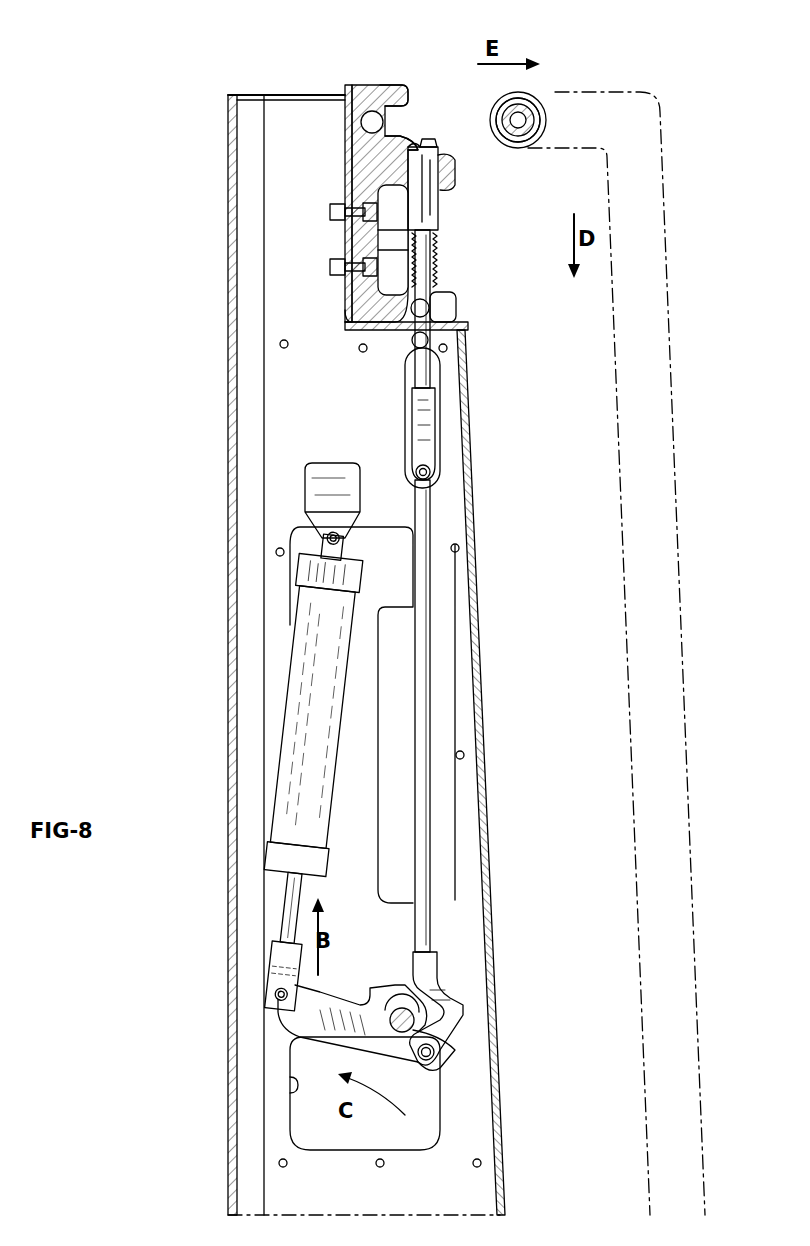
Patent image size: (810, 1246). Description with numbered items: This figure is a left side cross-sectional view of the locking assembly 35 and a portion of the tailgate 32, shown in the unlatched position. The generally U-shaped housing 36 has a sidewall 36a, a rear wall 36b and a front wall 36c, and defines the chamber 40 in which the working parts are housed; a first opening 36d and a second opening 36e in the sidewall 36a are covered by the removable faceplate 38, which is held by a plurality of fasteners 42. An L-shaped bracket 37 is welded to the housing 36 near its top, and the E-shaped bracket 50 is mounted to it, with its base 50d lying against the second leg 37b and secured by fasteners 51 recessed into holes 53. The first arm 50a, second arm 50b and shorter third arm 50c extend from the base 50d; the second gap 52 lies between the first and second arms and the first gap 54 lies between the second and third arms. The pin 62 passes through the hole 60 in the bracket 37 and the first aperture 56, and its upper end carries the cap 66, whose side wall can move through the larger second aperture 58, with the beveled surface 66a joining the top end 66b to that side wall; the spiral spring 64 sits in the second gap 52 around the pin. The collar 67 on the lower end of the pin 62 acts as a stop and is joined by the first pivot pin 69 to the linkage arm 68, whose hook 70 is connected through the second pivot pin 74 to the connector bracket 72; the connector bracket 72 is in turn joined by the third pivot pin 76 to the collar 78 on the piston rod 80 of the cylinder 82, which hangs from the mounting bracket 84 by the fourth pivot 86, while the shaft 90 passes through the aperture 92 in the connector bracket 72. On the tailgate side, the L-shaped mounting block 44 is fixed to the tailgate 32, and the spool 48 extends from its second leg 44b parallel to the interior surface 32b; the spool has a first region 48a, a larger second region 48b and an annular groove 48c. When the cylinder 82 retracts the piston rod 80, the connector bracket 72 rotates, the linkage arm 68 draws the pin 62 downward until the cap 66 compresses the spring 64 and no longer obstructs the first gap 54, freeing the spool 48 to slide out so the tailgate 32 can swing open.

The tailgate 32 is at (651, 681).
The interior surface of tailgate 32b is at (606, 392).
The locking assembly 35 is at (490, 272).
The housing 36 is at (235, 655).
The sidewall of housing 36a is at (327, 817).
The rear wall of housing 36b is at (482, 800).
The front wall of housing 36c is at (237, 250).
The first opening 36d is at (290, 1085).
The second opening 36e is at (440, 370).
The L-shaped bracket 37 is at (408, 236).
The second leg of L-shaped bracket 37b is at (385, 270).
The faceplate 38 is at (383, 958).
The chamber 40 is at (288, 428).
The fasteners 42 is at (280, 344).
The mounting block 44 is at (640, 634).
The second leg of mounting block 44b is at (590, 85).
The spool 48 is at (524, 77).
The first region of spool 48a is at (505, 112).
The second region of spool 48b is at (518, 120).
The annular groove 48c is at (544, 118).
The E-shaped bracket 50 is at (432, 206).
The first arm of bracket 50a is at (462, 303).
The second arm of bracket 50b is at (455, 175).
The third arm of bracket 50c is at (395, 88).
The base of bracket 50d is at (352, 320).
The fasteners 51 is at (330, 212).
The second gap 52 is at (385, 242).
The holes 53 is at (388, 195).
The first gap 54 is at (368, 124).
The first aperture 56 is at (445, 330).
The second aperture 58 is at (392, 148).
The hole 60 is at (450, 343).
The pin 62 is at (464, 309).
The spiral spring 64 is at (438, 246).
The cap 66 is at (478, 141).
The beveled surface 66a is at (465, 128).
The top end of cap 66b is at (440, 145).
The collar 67 is at (425, 410).
The linkage arm 68 is at (436, 720).
The first pivot pin 69 is at (430, 475).
The hook 70 is at (482, 1008).
The connector bracket 72 is at (358, 1041).
The second pivot pin 74 is at (432, 1062).
The third pivot pin 76 is at (276, 997).
The collar 78 is at (232, 975).
The piston rod 80 is at (285, 905).
The cylinder 82 is at (240, 766).
The mounting bracket 84 is at (322, 538).
The fourth pivot 86 is at (320, 500).
The shaft 90 is at (402, 1024).
The aperture 92 is at (434, 1052).